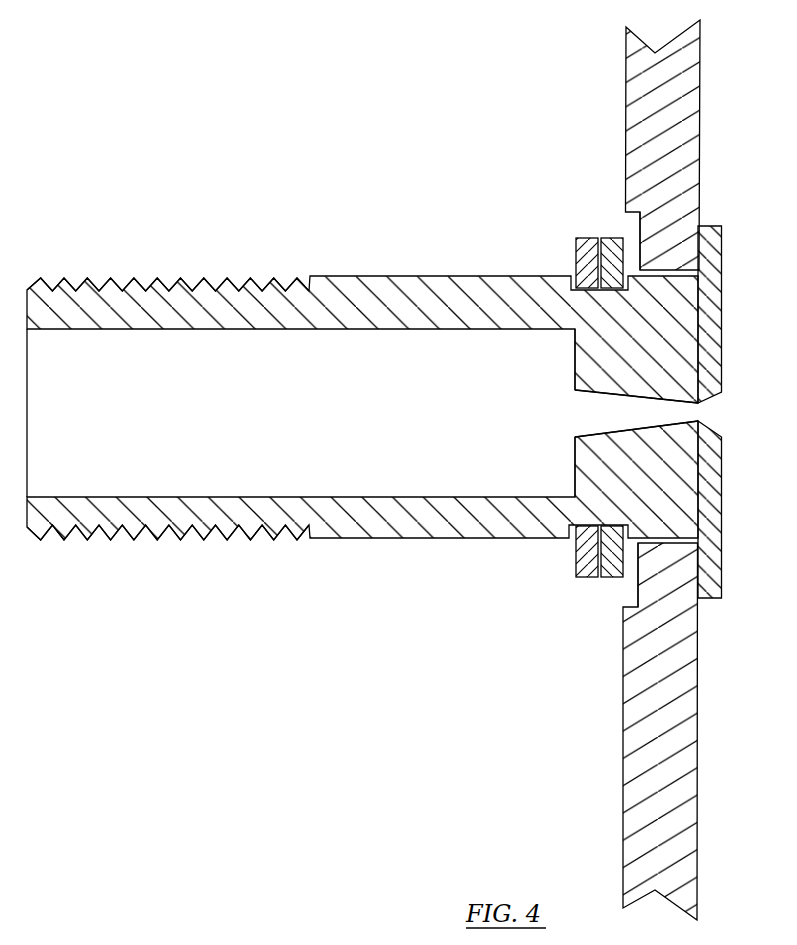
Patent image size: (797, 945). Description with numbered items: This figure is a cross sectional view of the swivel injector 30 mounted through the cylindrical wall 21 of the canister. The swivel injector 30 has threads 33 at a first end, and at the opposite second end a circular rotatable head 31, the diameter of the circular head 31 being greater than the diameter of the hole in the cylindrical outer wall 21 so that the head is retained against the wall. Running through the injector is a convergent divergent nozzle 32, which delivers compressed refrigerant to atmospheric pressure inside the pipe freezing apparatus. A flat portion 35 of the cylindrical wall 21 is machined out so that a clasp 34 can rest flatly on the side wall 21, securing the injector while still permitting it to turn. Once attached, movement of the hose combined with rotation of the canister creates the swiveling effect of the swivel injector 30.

The cylindrical wall 21 is at (684, 138).
The swivel injector 30 is at (401, 374).
The circular rotatable head 31 is at (714, 285).
The convergent divergent nozzle 32 is at (592, 413).
The threads 33 is at (153, 537).
The clasp 34 is at (575, 570).
The flat portion 35 is at (637, 576).